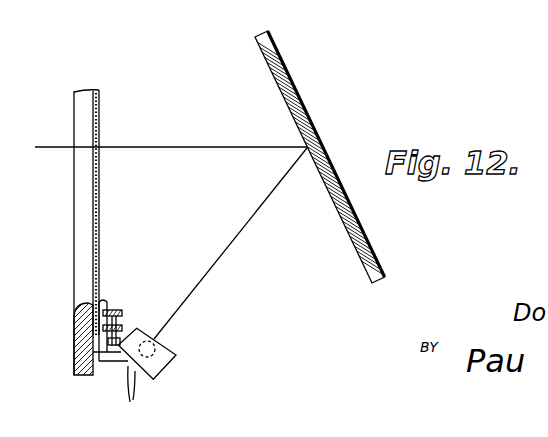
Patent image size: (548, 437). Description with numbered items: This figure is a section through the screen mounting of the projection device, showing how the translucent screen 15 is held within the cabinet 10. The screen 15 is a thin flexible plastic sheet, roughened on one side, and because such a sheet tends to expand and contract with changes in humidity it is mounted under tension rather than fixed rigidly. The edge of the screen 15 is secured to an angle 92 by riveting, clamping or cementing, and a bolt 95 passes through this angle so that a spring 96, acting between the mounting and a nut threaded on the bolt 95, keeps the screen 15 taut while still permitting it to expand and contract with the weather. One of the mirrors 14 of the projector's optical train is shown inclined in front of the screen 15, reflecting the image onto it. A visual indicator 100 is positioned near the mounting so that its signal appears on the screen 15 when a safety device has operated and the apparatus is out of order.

The cabinet 10 is at (73, 273).
The mirror 14 is at (321, 143).
The translucent screen 15 is at (102, 205).
The angle 92 is at (104, 300).
The bolt 95 is at (110, 320).
The spring 96 is at (74, 338).
The visual indicator 100 is at (170, 354).